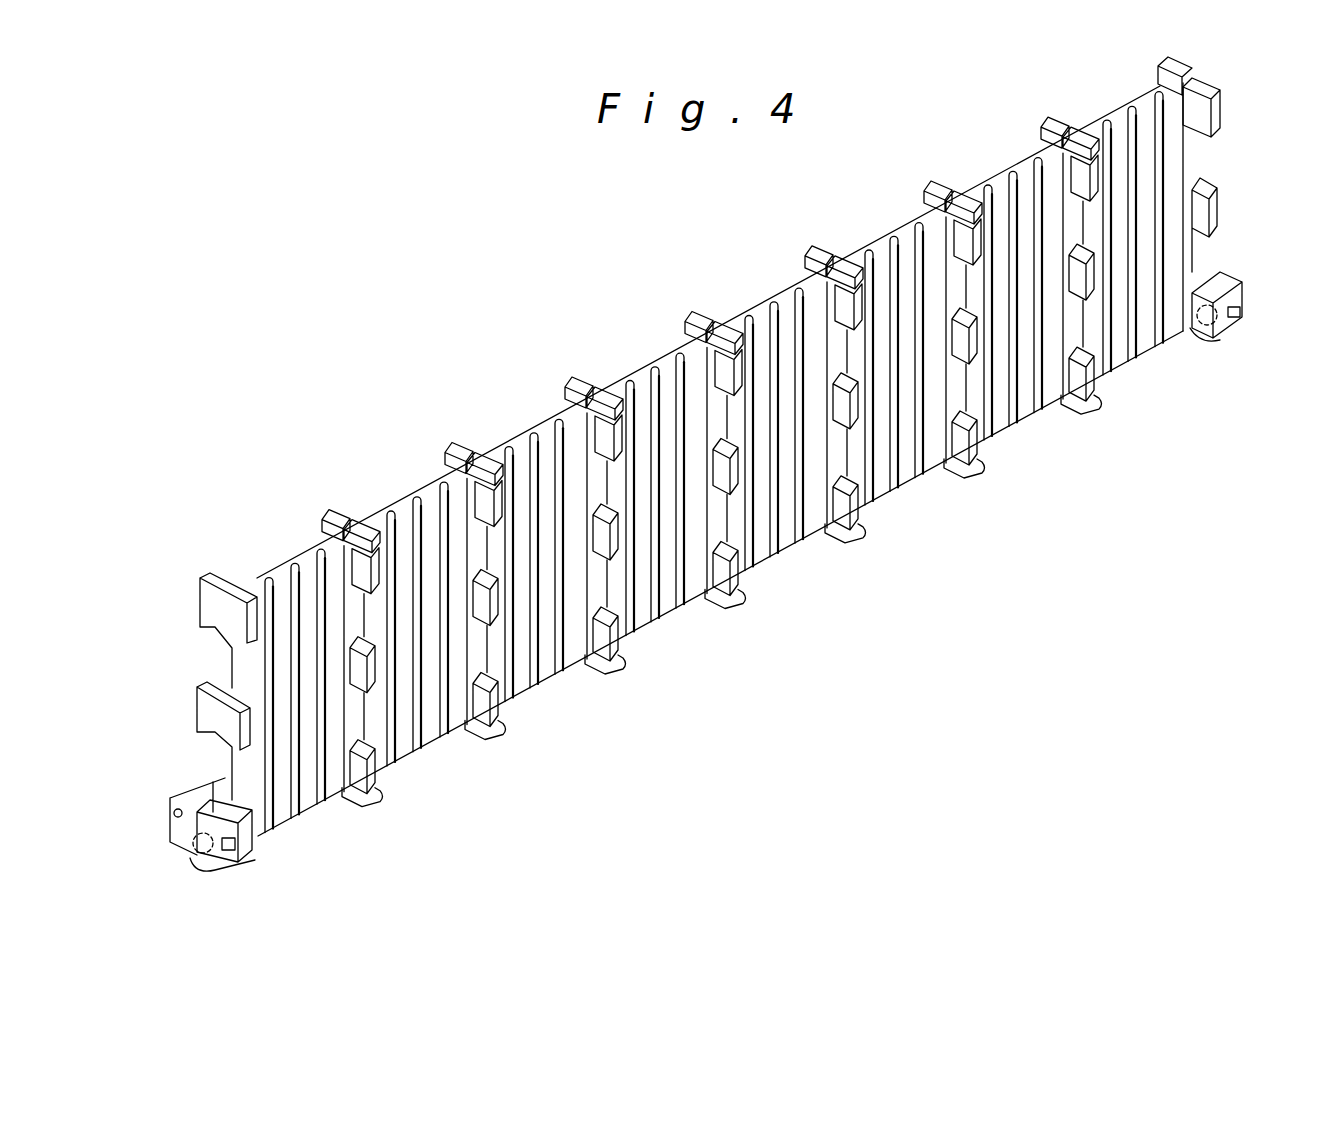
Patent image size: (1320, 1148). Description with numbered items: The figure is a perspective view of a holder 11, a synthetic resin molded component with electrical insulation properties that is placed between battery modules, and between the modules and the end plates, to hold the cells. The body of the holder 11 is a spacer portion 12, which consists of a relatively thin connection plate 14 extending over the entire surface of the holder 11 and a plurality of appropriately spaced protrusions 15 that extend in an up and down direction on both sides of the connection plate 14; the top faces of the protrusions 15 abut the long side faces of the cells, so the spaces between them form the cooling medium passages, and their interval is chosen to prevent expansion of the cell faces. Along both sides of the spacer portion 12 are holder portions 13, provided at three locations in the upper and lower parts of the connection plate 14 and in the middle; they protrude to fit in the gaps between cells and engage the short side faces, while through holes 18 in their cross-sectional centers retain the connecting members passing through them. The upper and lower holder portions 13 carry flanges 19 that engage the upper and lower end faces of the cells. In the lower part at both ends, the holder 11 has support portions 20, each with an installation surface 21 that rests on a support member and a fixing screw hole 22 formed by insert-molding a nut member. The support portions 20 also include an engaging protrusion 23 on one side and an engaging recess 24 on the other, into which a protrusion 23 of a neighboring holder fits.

The holder 11 is at (530, 393).
The spacer portion 12 is at (645, 366).
The holder portions 13 is at (197, 690).
The connection plate 14 is at (667, 372).
The protrusions 15 is at (773, 305).
The through holes 18 is at (483, 722).
The flanges 19 is at (490, 465).
The support portions 20 is at (250, 820).
The installation surface 21 is at (232, 862).
The fixing screw hole 22 is at (202, 862).
The engaging protrusion 23 is at (240, 848).
The engaging recess 24 is at (178, 803).